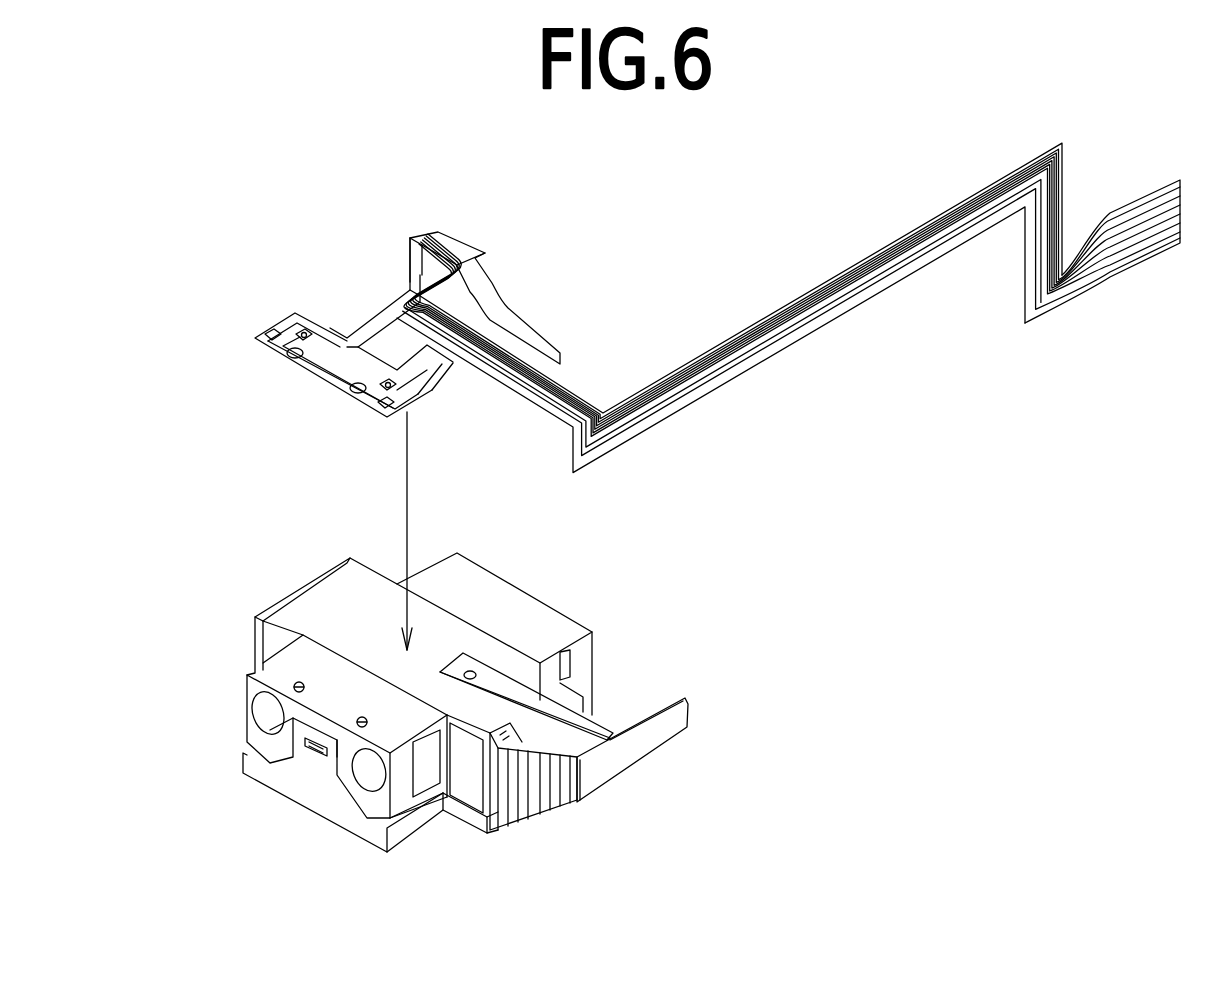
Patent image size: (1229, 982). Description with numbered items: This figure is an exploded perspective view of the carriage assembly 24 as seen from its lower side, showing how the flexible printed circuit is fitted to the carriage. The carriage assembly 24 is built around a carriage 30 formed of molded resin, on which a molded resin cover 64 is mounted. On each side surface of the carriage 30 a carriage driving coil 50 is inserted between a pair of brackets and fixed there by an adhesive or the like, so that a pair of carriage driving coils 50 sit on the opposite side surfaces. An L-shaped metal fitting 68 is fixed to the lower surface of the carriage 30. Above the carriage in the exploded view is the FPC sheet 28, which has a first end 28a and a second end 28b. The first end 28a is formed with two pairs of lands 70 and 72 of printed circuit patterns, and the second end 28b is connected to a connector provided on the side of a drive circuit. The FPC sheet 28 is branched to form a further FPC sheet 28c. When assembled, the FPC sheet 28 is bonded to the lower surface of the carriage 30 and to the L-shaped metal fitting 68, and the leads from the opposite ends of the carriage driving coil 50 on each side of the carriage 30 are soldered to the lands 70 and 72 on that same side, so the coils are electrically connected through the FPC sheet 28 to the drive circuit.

The carriage assembly 24 is at (605, 620).
The FPC sheet 28 is at (801, 298).
The first end 28a is at (333, 372).
The second end 28b is at (1132, 205).
The FPC sheet 28c is at (505, 308).
The carriage 30 is at (515, 602).
The carriage driving coil 50 is at (255, 645).
The cover 64 is at (315, 795).
The L-shaped metal fitting 68 is at (640, 765).
The land 70 is at (270, 335).
The land 72 is at (305, 333).